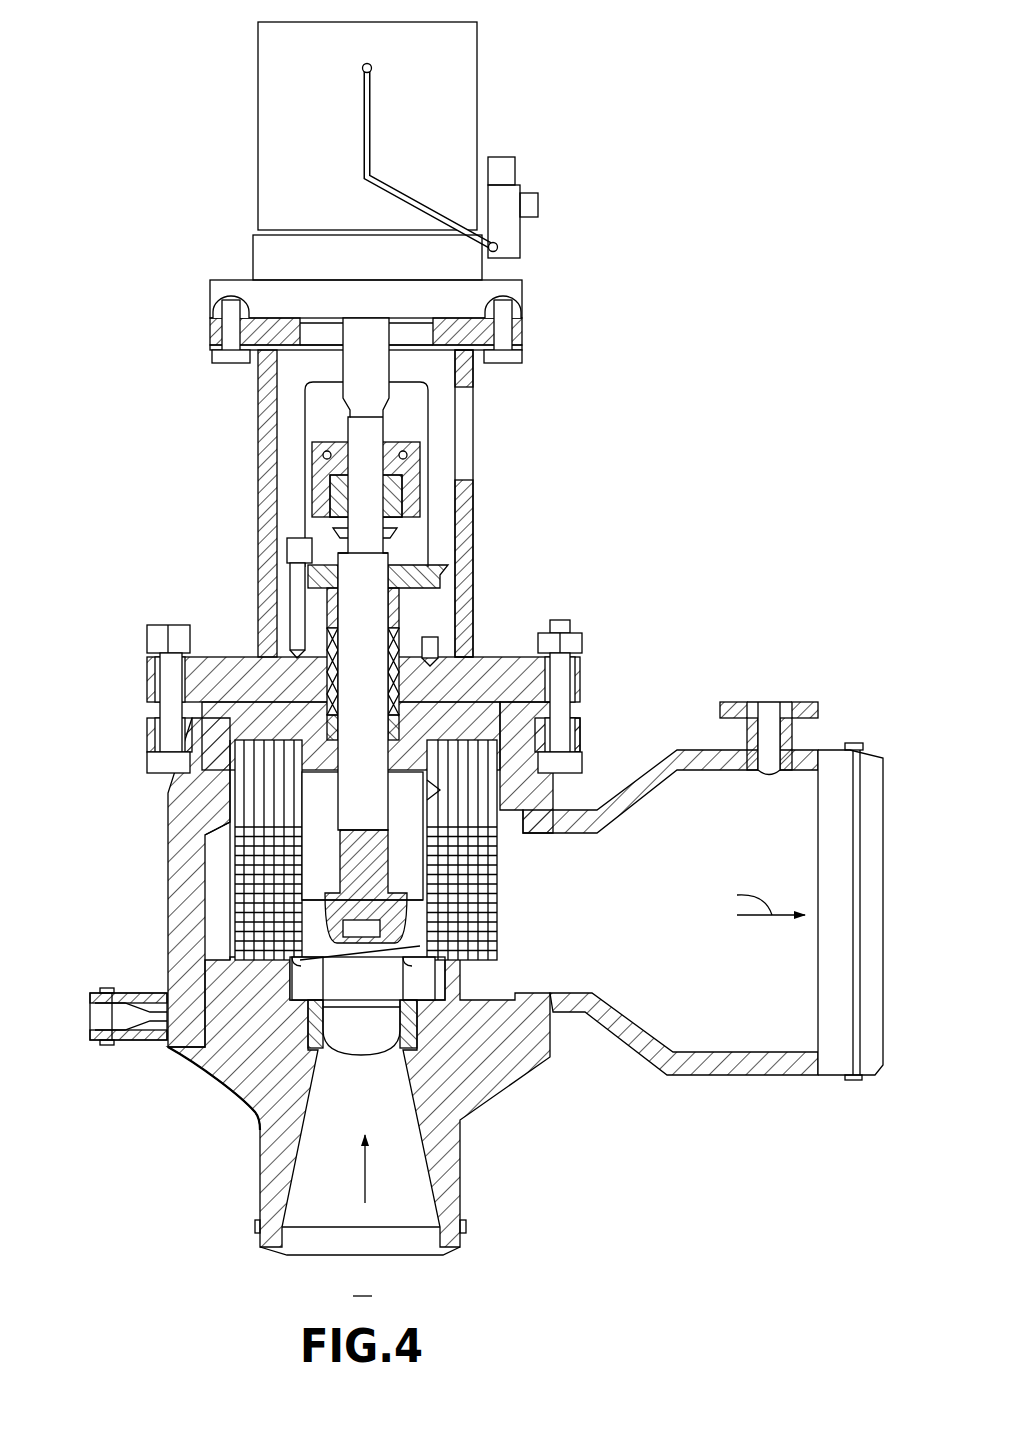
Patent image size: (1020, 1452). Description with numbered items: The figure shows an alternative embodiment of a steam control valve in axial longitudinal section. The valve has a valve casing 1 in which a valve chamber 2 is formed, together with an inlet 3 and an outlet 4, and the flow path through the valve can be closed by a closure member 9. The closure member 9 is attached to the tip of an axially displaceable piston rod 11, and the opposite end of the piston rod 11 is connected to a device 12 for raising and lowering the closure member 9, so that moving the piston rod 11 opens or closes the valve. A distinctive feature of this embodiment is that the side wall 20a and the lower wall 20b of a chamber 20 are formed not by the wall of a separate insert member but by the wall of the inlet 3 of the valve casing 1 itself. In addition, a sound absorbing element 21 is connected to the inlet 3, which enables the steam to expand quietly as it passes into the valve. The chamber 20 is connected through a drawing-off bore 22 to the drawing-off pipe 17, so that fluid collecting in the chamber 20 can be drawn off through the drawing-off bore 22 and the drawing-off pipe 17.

The valve casing 1 is at (180, 907).
The valve chamber 2 is at (210, 847).
The inlet 3 is at (303, 1187).
The outlet 4 is at (842, 1037).
The closure member 9 is at (237, 1082).
The piston rod 11 is at (355, 597).
The device for raising and lowering the closure member 12 is at (258, 258).
The drawing-off pipe 17 is at (93, 1018).
The chamber 20 is at (290, 972).
The side wall 20a is at (437, 983).
The lower wall 20b is at (432, 1003).
The sound absorbing element 21 is at (248, 847).
The drawing-off bore 22 is at (283, 985).